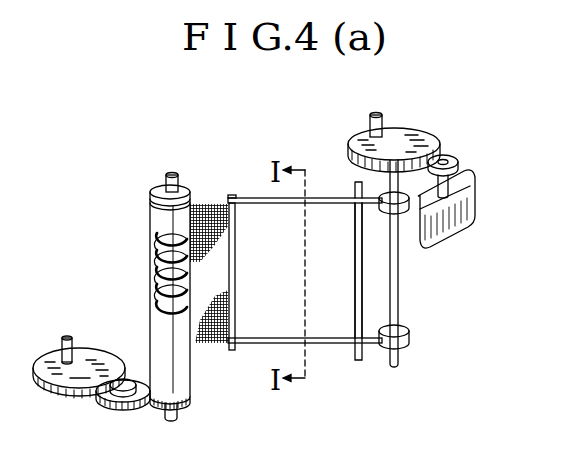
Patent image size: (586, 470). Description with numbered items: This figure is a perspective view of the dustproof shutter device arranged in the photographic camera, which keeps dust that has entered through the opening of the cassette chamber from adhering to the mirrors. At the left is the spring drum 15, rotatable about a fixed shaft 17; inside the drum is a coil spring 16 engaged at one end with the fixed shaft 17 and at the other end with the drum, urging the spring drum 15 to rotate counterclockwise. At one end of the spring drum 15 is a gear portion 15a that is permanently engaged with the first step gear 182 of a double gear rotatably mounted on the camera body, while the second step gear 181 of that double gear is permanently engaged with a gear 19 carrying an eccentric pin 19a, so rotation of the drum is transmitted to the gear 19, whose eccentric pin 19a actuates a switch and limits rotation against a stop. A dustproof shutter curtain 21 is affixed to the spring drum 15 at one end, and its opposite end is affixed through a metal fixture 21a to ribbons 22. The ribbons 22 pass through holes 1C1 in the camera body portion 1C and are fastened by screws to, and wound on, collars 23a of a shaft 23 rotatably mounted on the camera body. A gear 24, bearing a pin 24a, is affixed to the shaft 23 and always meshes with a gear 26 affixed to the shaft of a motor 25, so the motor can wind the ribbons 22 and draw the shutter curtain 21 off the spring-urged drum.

The spring drum 15 is at (158, 190).
The gear portion 15a is at (188, 398).
The coil spring 16 is at (153, 255).
The fixed shaft 17 is at (172, 172).
The second step gear 181 is at (138, 406).
The first step gear 182 is at (115, 400).
The gear 19 is at (68, 378).
The eccentric pin 19a is at (67, 338).
The dustproof shutter curtain 21 is at (215, 206).
The metal fixture 21a is at (236, 265).
The ribbons 22 is at (257, 198).
The shaft 23 is at (398, 288).
The collars 23a is at (405, 212).
The gear 24 is at (432, 132).
The pin 24a is at (380, 114).
The motor 25 is at (475, 197).
The gear 26 is at (450, 157).
The frame post 1C is at (355, 277).
The holes 1C1 is at (373, 372).